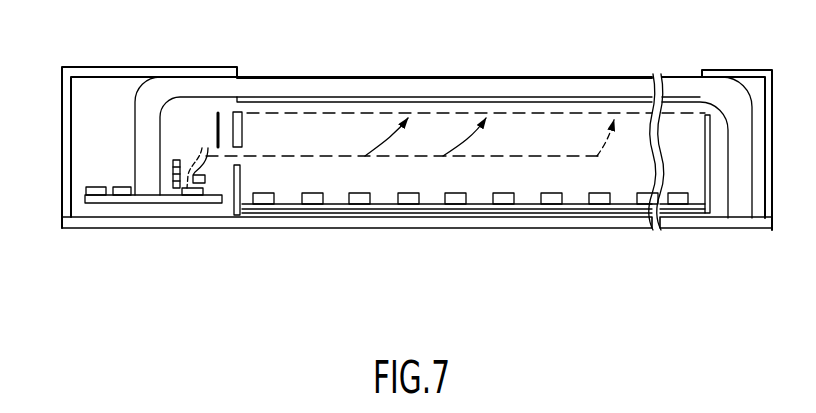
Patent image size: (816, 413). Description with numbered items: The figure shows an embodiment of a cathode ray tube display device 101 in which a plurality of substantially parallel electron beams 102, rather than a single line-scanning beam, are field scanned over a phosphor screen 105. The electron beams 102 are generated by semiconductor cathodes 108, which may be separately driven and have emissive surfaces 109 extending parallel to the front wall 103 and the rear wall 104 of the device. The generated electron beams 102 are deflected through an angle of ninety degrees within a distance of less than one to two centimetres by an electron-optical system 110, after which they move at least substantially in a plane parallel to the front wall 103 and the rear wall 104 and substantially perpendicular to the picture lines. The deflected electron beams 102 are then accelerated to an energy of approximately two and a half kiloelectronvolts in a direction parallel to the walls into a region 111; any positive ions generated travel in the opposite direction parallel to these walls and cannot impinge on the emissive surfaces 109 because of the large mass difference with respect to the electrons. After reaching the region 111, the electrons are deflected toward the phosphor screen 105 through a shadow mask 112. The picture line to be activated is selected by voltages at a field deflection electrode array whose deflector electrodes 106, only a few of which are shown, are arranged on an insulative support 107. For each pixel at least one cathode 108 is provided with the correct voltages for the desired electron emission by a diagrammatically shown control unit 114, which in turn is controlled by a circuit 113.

The display device 101 is at (62, 233).
The electron beams 102 is at (280, 156).
The front wall 103 is at (450, 78).
The rear wall 104 is at (487, 223).
The phosphor screen 105 is at (512, 102).
The deflector electrodes 106 is at (313, 193).
The insulative support 107 is at (430, 218).
The semiconductor cathodes 108 is at (192, 196).
The emissive surfaces 109 is at (203, 203).
The electron-optical system 110 is at (172, 140).
The region 111 is at (288, 199).
The shadow mask 112 is at (389, 113).
The circuit 113 is at (93, 196).
The control unit 114 is at (121, 196).